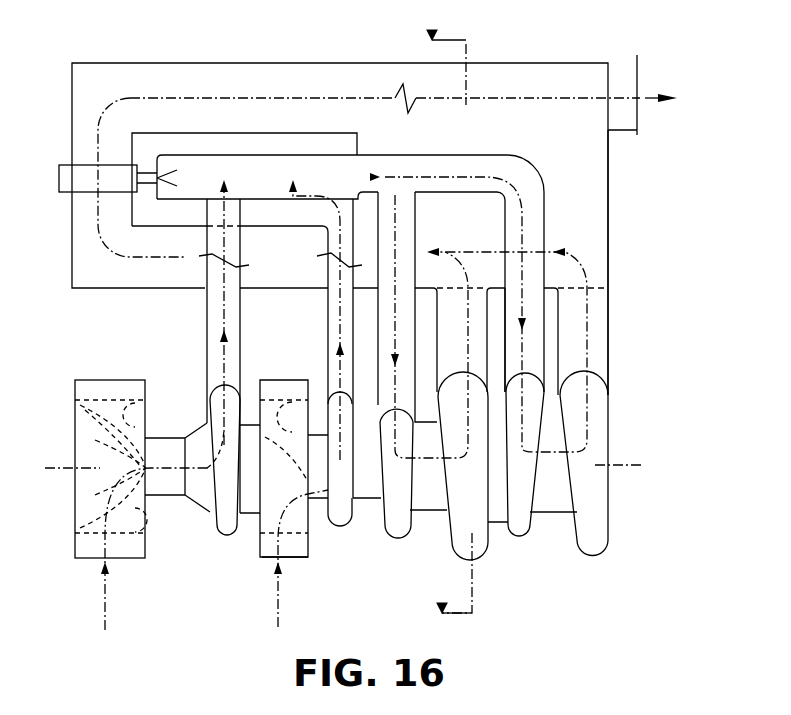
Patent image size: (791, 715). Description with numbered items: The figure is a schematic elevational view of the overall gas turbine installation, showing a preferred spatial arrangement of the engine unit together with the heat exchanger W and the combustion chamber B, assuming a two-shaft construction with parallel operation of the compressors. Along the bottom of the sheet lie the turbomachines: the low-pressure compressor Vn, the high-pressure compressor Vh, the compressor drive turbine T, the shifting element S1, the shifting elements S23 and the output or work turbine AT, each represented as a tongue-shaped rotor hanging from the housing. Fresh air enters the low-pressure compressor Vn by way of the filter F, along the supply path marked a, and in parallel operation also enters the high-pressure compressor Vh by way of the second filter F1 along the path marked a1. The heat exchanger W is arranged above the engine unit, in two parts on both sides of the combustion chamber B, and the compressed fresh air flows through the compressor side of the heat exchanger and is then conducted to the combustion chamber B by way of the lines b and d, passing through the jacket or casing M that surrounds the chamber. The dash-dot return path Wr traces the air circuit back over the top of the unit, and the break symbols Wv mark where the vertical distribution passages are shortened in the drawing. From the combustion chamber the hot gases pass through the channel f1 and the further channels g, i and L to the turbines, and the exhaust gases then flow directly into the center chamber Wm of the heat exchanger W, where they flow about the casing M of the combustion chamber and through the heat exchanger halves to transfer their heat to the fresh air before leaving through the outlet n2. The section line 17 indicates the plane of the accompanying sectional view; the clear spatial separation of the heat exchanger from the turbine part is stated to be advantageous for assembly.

The heat exchanger W is at (359, 60).
The section line 17- 17 is at (464, 330).
The return passage Wr is at (369, 170).
The outlet n2 is at (642, 95).
The center chamber of heat exchanger Wm is at (596, 167).
The jacket or casing M is at (163, 218).
The combustion chamber B is at (372, 177).
The distribution passage (break) Wv is at (280, 268).
The channel f1 is at (540, 213).
The line b is at (206, 323).
The line d is at (330, 323).
The channel g is at (407, 379).
The channel i is at (483, 355).
The air channel L is at (604, 354).
The compressor drive turbine T is at (433, 502).
The shifting element S1 is at (253, 505).
The high-pressure compressor Vh is at (320, 494).
The shifting elements S23 is at (497, 515).
The output or work turbine AT is at (552, 500).
The filter F is at (82, 551).
The supply flow a is at (83, 493).
The low-pressure compressor Vn is at (172, 489).
The filter F1 is at (296, 548).
The supply flow a1 is at (267, 560).